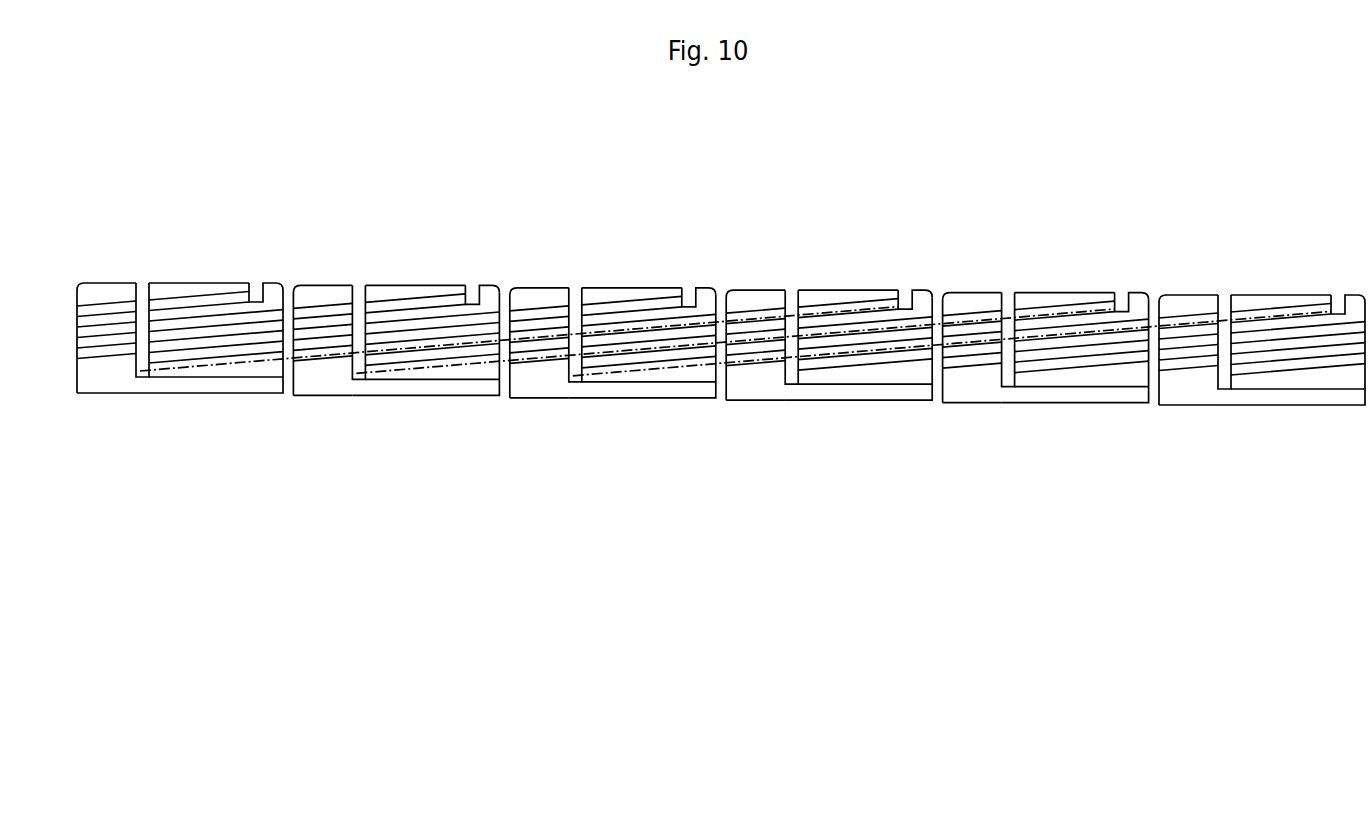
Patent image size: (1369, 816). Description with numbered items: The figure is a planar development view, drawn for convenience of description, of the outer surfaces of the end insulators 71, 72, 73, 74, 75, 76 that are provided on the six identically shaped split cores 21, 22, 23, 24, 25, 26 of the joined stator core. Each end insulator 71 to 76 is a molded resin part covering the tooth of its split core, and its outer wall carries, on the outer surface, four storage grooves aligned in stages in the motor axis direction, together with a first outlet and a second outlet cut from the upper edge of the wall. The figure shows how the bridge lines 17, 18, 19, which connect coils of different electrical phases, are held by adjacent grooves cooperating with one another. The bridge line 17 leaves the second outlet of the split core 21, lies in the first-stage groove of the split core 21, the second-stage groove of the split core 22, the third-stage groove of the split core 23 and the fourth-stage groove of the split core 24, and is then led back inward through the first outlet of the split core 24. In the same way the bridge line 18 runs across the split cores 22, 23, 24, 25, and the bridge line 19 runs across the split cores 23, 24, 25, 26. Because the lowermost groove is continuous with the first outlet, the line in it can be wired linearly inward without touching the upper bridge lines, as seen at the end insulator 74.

The split core 26 is at (209, 295).
The split core 25 is at (425, 298).
The split core 24 is at (642, 300).
The split core 23 is at (858, 303).
The split core 22 is at (1075, 305).
The split core 21 is at (1291, 307).
The end insulator 76 is at (173, 330).
The end insulator 75 is at (389, 333).
The end insulator 74 is at (606, 335).
The end insulator 73 is at (822, 338).
The end insulator 72 is at (1039, 340).
The end insulator 71 is at (1255, 342).
The bridge line 19 is at (891, 292).
The bridge line 18 is at (1108, 295).
The bridge line 17 is at (1324, 297).